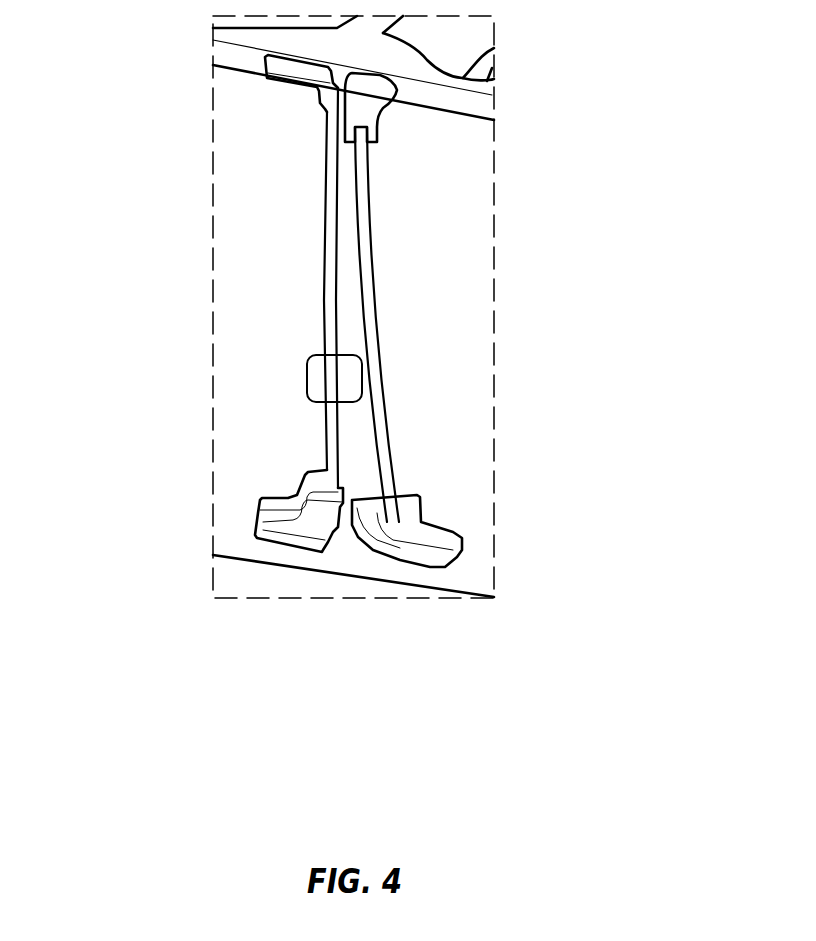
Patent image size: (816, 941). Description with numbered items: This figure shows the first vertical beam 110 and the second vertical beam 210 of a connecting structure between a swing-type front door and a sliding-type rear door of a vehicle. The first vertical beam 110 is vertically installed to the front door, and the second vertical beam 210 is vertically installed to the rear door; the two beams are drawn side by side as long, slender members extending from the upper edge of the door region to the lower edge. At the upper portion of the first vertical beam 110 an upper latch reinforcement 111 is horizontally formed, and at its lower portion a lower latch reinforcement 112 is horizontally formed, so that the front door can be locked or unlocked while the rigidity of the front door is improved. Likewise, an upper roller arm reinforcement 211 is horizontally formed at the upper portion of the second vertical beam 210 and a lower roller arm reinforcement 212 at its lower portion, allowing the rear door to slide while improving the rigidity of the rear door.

The first vertical beam 110 is at (613, 322).
The upper latch reinforcement 111 is at (365, 118).
The lower latch reinforcement 112 is at (413, 522).
The second vertical beam 210 is at (102, 232).
The upper roller arm reinforcement 211 is at (318, 90).
The lower roller arm reinforcement 212 is at (262, 500).